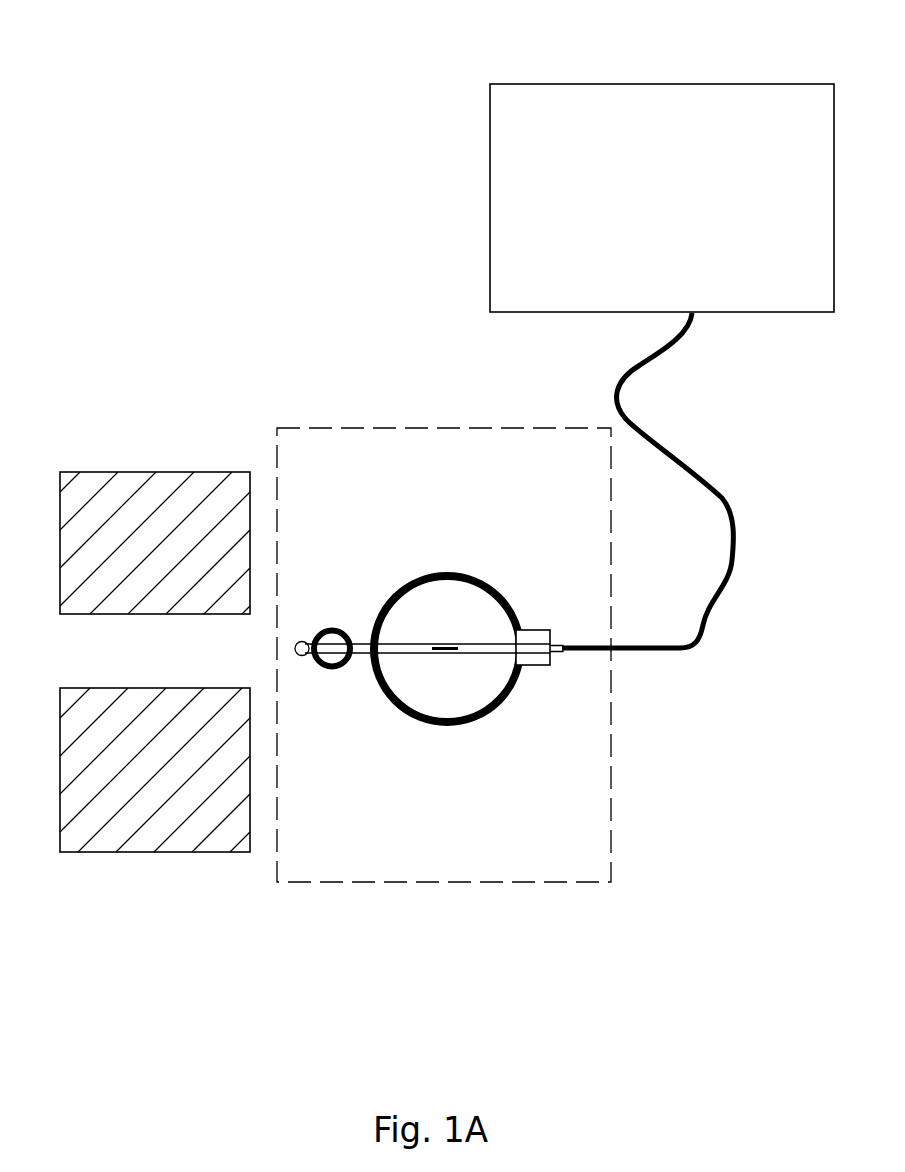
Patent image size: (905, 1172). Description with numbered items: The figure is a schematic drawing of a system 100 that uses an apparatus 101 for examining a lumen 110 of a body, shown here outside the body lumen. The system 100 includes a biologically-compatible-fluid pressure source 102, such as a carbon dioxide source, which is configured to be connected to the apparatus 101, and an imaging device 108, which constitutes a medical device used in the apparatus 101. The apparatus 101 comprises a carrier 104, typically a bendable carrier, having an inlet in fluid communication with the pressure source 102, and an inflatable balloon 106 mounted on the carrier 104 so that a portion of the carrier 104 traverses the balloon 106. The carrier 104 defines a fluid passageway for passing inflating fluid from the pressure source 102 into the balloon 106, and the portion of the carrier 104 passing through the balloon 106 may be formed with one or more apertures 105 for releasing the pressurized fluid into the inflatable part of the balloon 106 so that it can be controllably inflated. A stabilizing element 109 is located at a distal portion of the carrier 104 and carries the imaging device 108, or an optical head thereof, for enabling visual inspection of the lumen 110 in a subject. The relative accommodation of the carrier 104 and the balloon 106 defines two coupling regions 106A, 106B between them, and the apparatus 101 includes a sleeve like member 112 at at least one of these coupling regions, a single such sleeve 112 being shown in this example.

The system 100 is at (267, 190).
The apparatus 101 is at (438, 883).
The pressure source 102 is at (683, 84).
The carrier 104 is at (563, 650).
The apertures 105 is at (440, 648).
The inflatable balloon 106 is at (442, 574).
The coupling region 106A is at (539, 667).
The coupling region 106B is at (369, 654).
The imaging device 108 is at (294, 656).
The stabilizing element 109 is at (321, 627).
The lumen 110 is at (228, 660).
The sleeve like member 112 is at (528, 630).